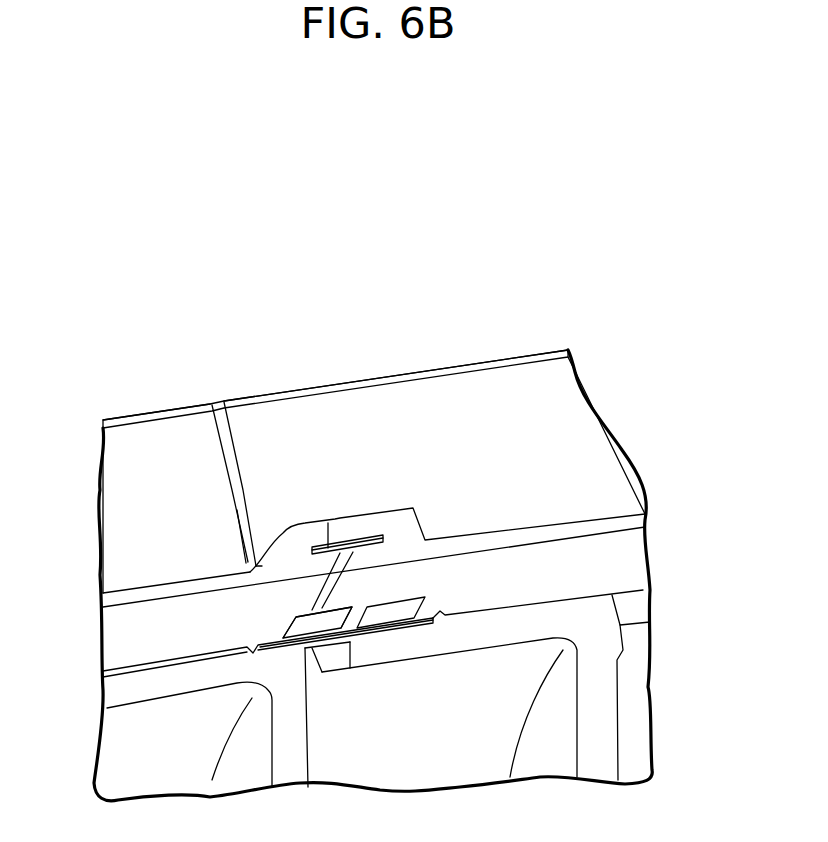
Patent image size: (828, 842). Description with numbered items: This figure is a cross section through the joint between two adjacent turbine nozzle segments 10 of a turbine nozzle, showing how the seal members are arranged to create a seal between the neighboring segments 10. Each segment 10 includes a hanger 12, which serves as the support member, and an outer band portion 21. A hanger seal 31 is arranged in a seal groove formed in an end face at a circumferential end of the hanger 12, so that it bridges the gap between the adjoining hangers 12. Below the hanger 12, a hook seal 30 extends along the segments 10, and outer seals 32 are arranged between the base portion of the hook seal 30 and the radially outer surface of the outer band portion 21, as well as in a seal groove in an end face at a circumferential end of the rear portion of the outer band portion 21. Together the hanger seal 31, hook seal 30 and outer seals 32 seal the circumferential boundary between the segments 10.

The turbine nozzle segment 10 is at (128, 405).
The hanger 12 is at (175, 447).
The outer band portion 21 is at (450, 742).
The hook seal 30 is at (303, 628).
The hanger seal 31 is at (322, 525).
The outer seal 32 is at (346, 634).